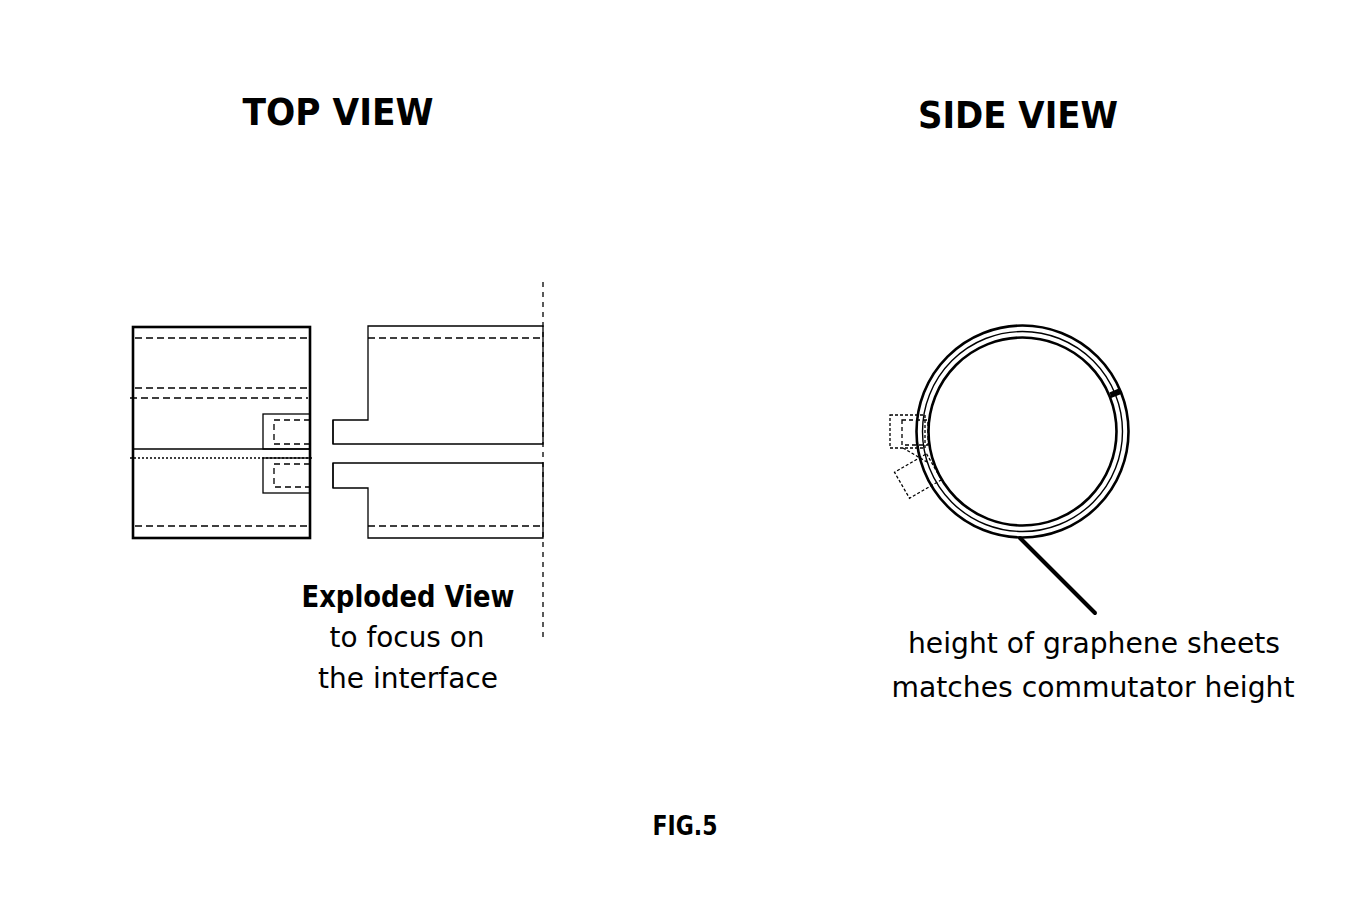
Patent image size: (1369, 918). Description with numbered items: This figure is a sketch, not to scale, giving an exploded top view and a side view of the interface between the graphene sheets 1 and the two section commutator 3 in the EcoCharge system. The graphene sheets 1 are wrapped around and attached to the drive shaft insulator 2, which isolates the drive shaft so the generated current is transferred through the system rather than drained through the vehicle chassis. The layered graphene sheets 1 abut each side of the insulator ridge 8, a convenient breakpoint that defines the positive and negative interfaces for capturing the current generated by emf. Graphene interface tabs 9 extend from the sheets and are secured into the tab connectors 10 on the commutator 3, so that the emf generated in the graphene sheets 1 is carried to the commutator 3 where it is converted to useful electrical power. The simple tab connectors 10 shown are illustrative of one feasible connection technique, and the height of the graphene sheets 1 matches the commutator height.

The graphene sheets 1 is at (490, 325).
The drive shaft insulator 2 is at (1022, 338).
The commutator 3 is at (1162, 462).
The insulator ridge 8 is at (893, 462).
The graphene tabs 9 is at (338, 420).
The tab connectors 10 is at (895, 415).